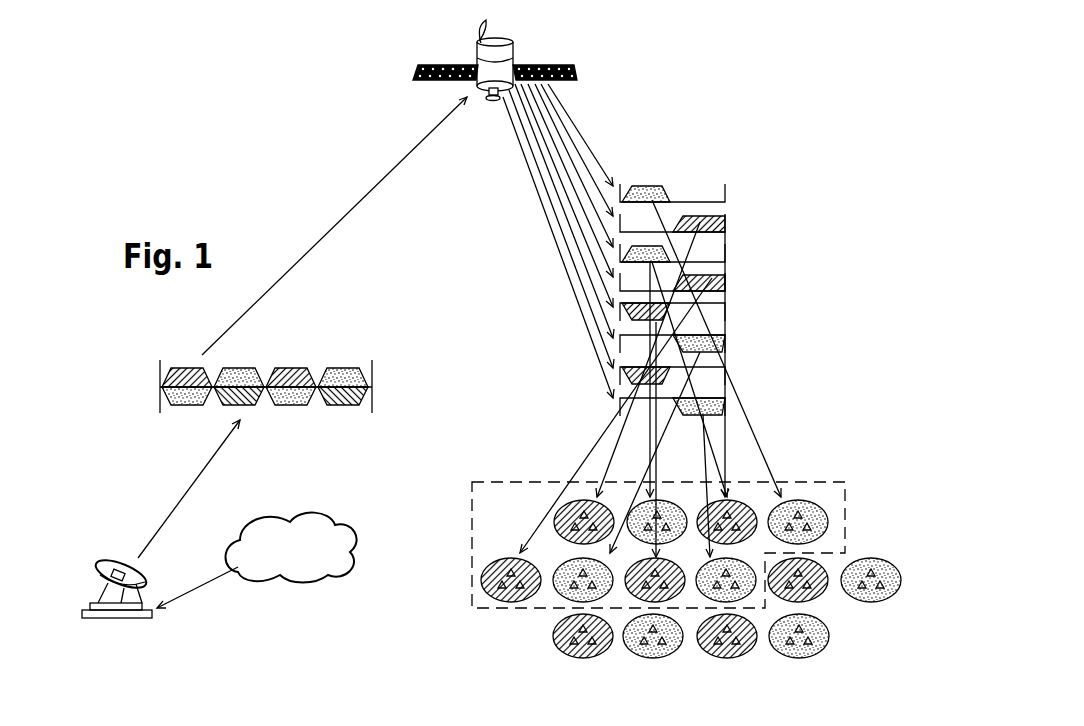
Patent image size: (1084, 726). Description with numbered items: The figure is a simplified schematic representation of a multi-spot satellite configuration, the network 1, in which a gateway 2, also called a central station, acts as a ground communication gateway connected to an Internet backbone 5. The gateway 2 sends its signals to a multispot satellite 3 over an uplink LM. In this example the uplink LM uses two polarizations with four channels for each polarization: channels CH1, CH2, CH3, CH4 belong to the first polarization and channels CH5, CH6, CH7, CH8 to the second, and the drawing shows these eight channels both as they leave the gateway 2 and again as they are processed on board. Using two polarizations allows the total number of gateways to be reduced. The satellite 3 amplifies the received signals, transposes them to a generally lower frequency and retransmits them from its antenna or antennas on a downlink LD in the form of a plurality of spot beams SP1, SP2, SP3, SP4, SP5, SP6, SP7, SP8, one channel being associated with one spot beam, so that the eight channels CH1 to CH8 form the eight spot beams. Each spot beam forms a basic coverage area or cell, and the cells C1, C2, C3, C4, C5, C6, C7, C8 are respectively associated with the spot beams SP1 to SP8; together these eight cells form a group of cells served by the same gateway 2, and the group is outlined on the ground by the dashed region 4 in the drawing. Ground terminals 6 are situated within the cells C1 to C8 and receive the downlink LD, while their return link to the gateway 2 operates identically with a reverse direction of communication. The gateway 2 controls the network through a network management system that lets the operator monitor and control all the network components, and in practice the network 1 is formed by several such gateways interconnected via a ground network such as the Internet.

The network 1 is at (237, 205).
The gateway 2 is at (126, 618).
The multispot satellite 3 is at (477, 52).
The coverage area of cells 4 is at (848, 518).
The Internet backbone 5 is at (330, 577).
The ground terminals 6 is at (514, 603).
The uplink LM is at (334, 226).
The downlink LD is at (558, 241).
The channel CH1 is at (190, 407).
The channel CH2 is at (247, 407).
The channel CH3 is at (293, 407).
The channel CH4 is at (343, 407).
The channel CH5 is at (178, 368).
The channel CH6 is at (242, 367).
The channel CH7 is at (297, 367).
The channel CH8 is at (342, 367).
The spot beam SP1 is at (672, 218).
The spot beam SP2 is at (722, 458).
The spot beam SP3 is at (658, 450).
The spot beam SP4 is at (642, 420).
The spot beam SP5 is at (617, 408).
The spot beam SP6 is at (718, 432).
The spot beam SP7 is at (545, 518).
The spot beam SP8 is at (613, 490).
The cell C1 is at (812, 498).
The cell C2 is at (750, 502).
The cell C3 is at (668, 498).
The cell C4 is at (553, 543).
The cell C5 is at (686, 618).
The cell C6 is at (567, 607).
The cell C7 is at (483, 578).
The cell C8 is at (752, 590).